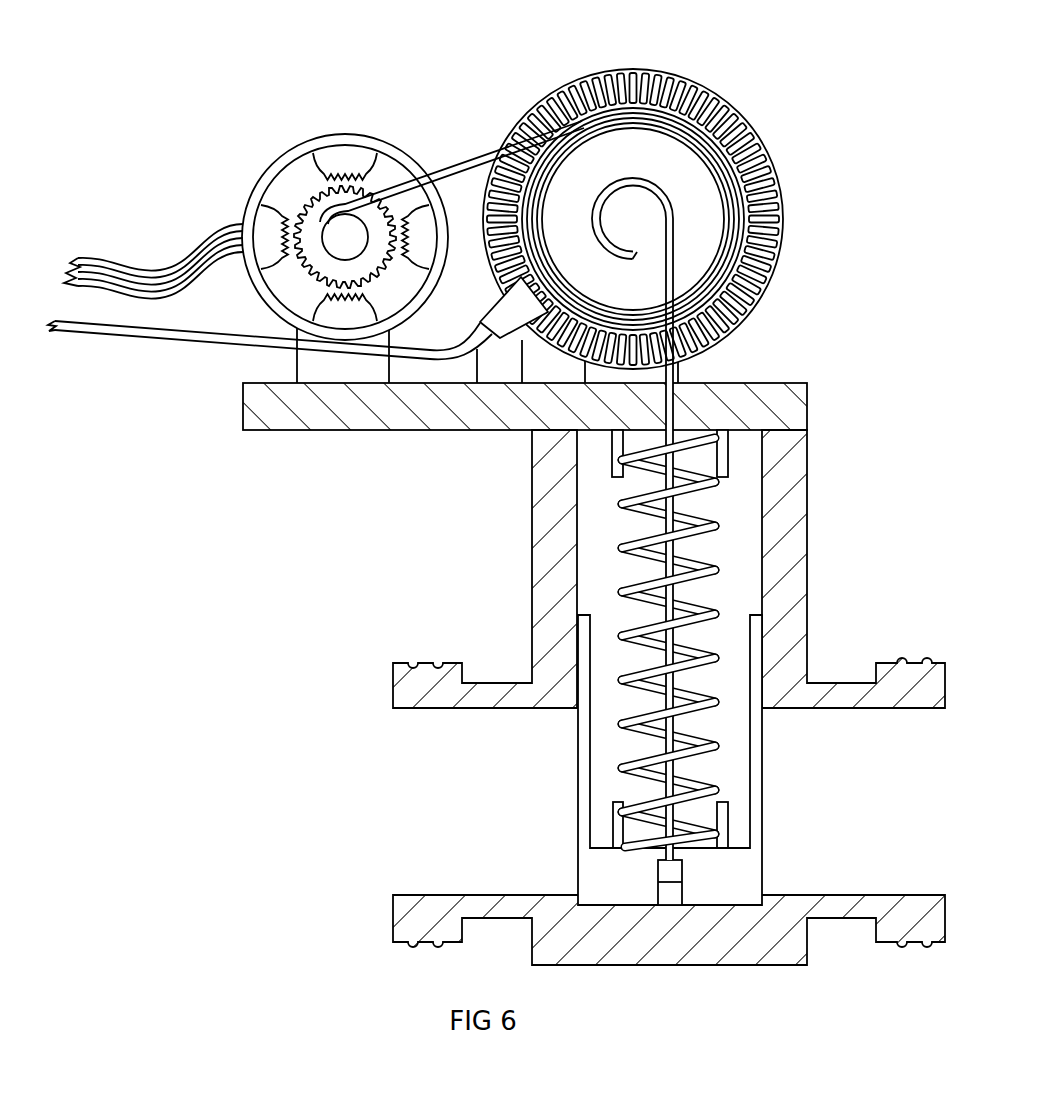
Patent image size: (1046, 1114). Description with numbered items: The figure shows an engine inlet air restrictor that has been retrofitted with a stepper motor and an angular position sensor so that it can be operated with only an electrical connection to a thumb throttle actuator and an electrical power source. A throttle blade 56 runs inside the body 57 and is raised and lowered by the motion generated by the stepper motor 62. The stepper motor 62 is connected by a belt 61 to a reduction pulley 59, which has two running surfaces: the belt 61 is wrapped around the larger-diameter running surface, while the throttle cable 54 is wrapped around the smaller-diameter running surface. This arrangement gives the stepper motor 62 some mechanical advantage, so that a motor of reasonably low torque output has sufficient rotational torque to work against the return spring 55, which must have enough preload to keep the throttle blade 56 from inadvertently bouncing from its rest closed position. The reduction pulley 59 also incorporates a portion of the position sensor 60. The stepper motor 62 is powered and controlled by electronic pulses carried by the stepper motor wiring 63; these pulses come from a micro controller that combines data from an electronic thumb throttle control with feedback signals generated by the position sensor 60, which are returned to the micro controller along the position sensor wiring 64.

The throttle cable 54 is at (670, 410).
The return spring 55 is at (630, 592).
The throttle blade 56 is at (612, 878).
The body 57 is at (788, 568).
The reduction pulley 59 is at (697, 188).
The position sensor 60 is at (518, 295).
The belt 61 is at (443, 168).
The stepper motor 62 is at (302, 203).
The stepper motor wiring 63 is at (173, 262).
The position sensor wiring 64 is at (212, 345).